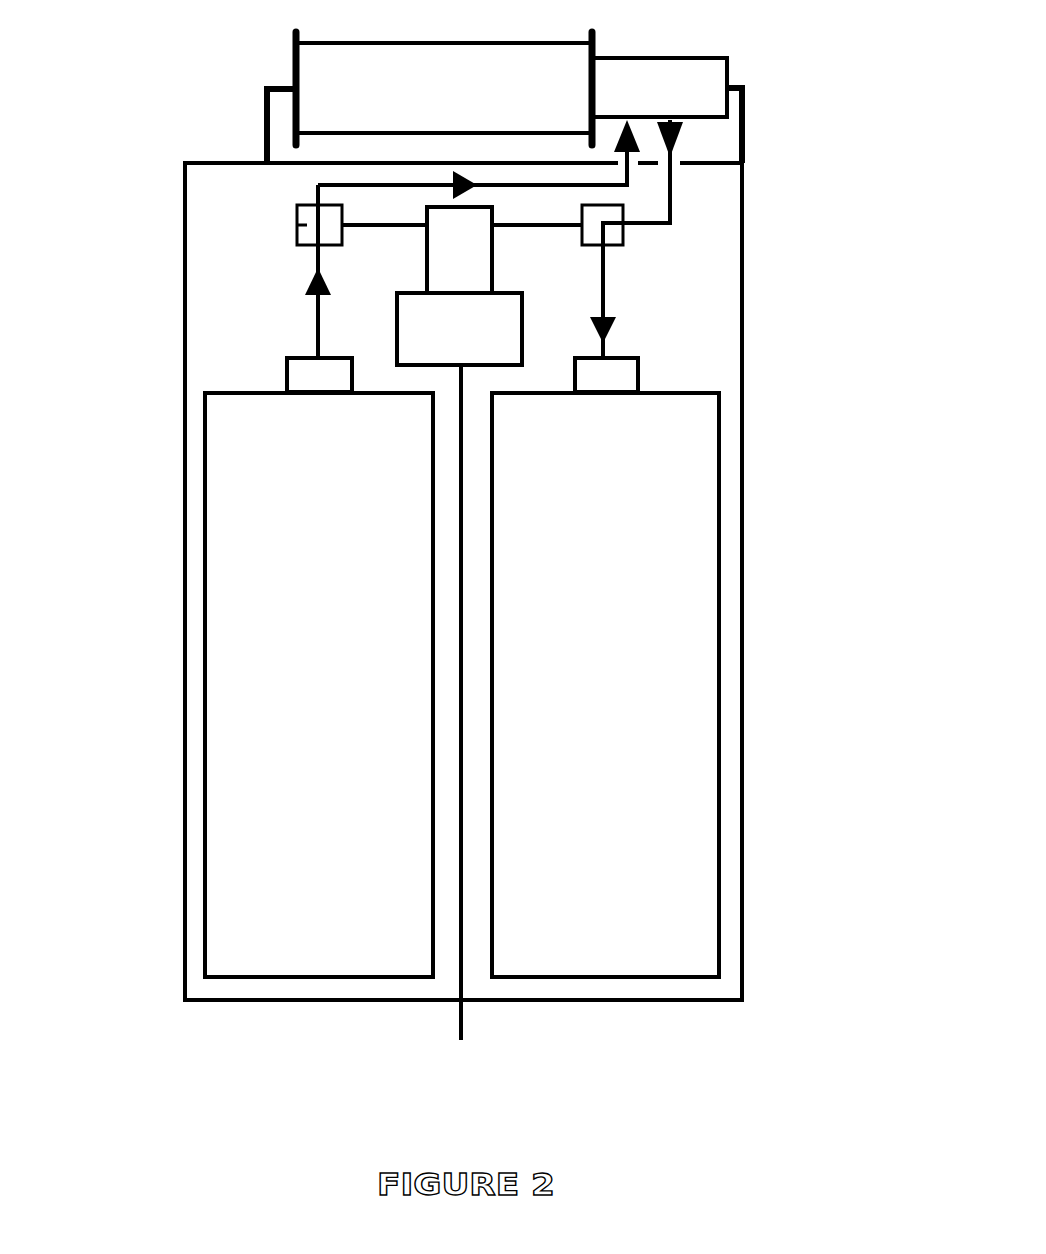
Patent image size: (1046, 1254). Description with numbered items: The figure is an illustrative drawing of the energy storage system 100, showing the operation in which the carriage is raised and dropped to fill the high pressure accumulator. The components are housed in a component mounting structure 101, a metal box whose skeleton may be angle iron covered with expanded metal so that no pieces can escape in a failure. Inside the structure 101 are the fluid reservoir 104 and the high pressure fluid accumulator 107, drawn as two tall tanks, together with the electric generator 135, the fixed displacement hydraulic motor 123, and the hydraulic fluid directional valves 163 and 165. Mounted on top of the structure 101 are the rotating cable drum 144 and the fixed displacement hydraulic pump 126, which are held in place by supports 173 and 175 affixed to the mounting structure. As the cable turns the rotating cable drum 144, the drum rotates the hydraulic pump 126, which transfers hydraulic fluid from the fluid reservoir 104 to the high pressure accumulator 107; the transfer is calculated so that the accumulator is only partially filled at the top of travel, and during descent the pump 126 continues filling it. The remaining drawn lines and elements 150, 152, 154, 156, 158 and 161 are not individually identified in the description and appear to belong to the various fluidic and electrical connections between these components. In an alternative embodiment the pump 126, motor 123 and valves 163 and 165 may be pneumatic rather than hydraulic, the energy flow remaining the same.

The energy storage system 100 is at (162, 1020).
The component mounting structure 101 is at (183, 805).
The fluid reservoir 104 is at (318, 540).
The high pressure fluid accumulator 107 is at (618, 540).
The fixed displacement hydraulic motor 123 is at (537, 227).
The fixed displacement hydraulic pump 126 is at (655, 83).
The electric generator 135 is at (460, 328).
The rotating cable drum 144 is at (435, 83).
The conduit 150 is at (393, 228).
The inlet line 152 is at (310, 260).
The pump 154 is at (462, 257).
The outlet line 156 is at (608, 262).
The conduit 158 is at (317, 180).
The conduit 161 is at (672, 183).
The hydraulic fluid directional valve 163 is at (303, 224).
The hydraulic fluid directional valve 165 is at (603, 213).
The support 173 is at (263, 117).
The support 175 is at (742, 125).